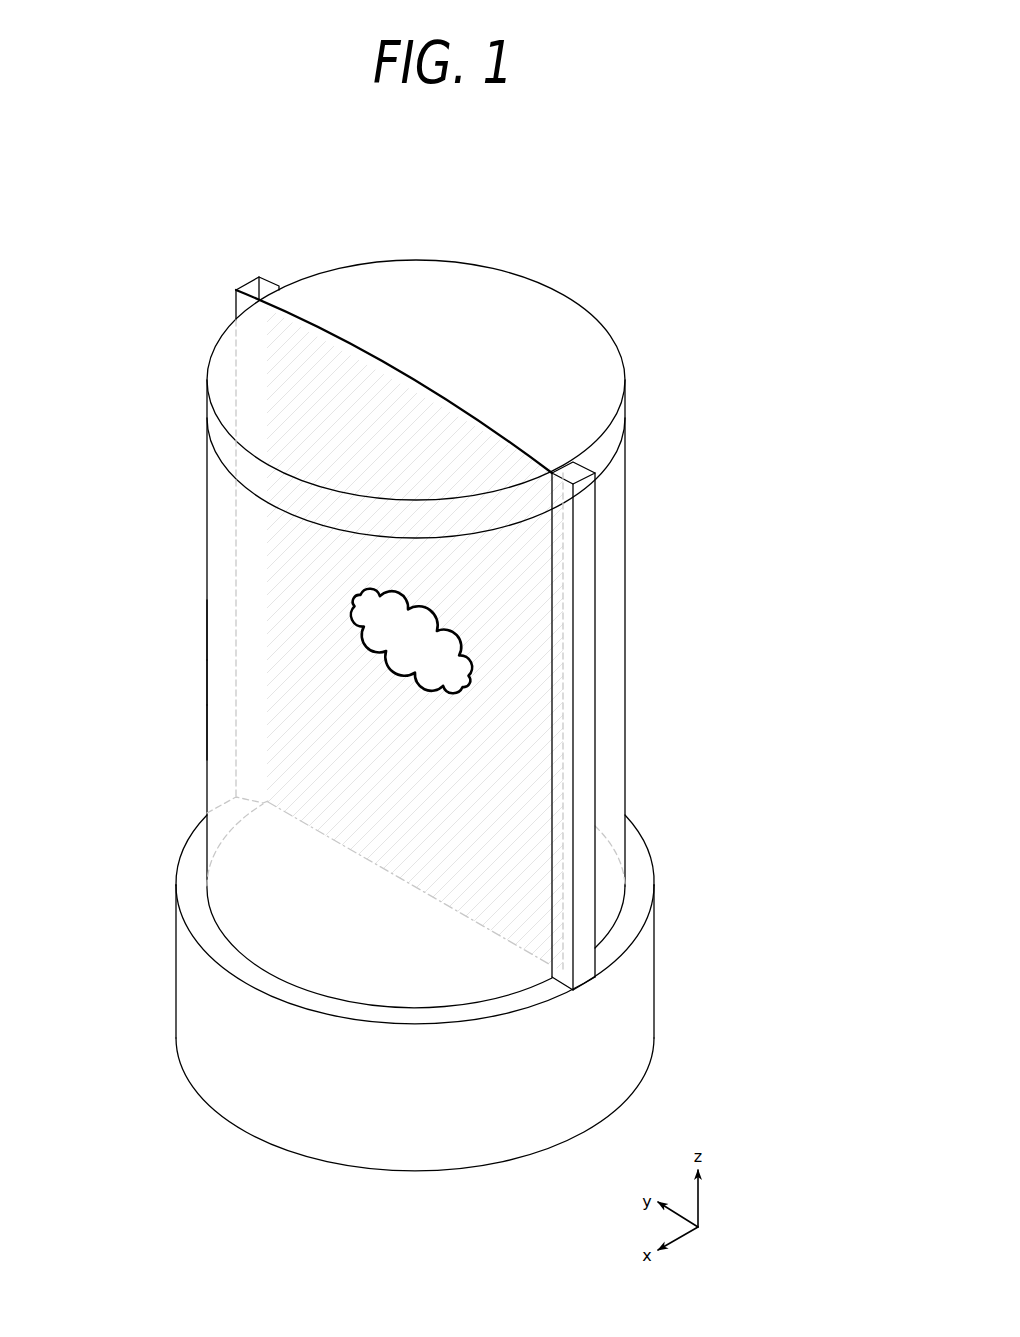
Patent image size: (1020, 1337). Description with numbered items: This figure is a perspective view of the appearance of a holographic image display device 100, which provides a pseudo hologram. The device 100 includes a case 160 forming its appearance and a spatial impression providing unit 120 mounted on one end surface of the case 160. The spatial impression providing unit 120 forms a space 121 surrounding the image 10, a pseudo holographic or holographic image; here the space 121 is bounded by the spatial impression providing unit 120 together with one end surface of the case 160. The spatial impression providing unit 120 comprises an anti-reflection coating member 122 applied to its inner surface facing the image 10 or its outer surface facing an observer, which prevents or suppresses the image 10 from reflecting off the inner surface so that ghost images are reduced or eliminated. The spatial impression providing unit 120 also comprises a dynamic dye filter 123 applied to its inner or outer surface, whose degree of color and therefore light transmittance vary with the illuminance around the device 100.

The holographic image display device 100 is at (445, 229).
The image 10 is at (352, 603).
The spatial impression providing unit 120 is at (207, 551).
The space 121 is at (228, 722).
The anti-reflection coating member 122 is at (217, 646).
The dynamic dye filter 123 is at (217, 685).
The case 160 is at (602, 520).